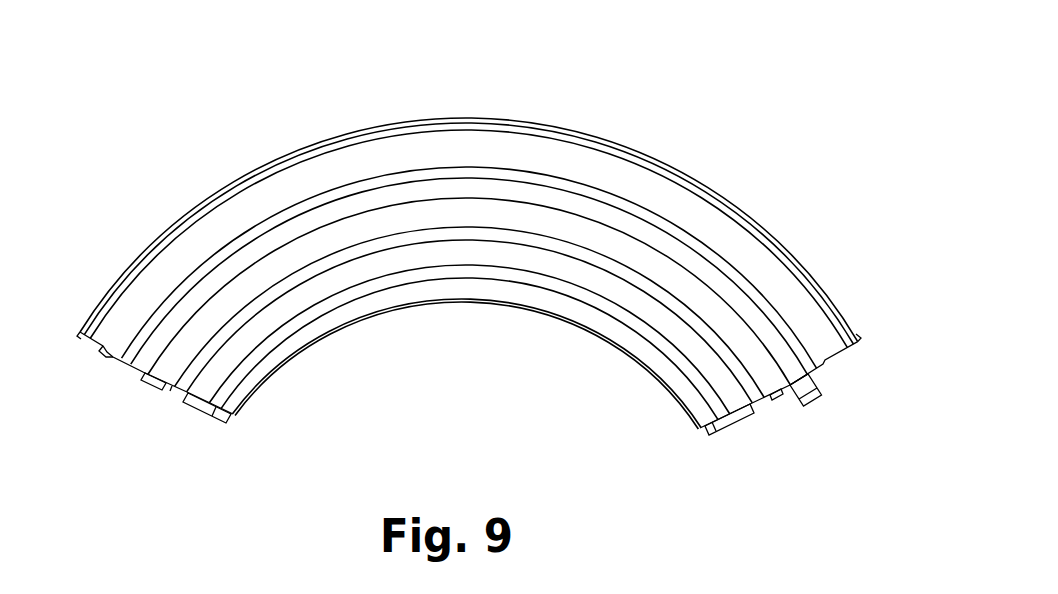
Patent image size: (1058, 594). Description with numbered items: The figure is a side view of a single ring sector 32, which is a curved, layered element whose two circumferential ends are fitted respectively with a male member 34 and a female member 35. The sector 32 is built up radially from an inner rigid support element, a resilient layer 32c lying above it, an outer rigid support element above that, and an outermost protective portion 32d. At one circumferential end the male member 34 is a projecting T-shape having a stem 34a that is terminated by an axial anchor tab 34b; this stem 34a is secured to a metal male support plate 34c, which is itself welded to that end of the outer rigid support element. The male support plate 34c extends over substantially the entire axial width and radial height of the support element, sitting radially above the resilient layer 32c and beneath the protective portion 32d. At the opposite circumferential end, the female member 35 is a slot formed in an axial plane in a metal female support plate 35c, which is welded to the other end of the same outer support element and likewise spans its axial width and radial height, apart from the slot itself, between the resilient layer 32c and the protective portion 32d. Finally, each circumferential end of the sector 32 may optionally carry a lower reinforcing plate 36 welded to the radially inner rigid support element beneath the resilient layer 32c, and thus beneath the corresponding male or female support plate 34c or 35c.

The sector 32 is at (647, 93).
The resilient layer 32c is at (181, 378).
The protective portion 32d is at (97, 338).
The male member 34 is at (798, 415).
The stem 34a is at (800, 387).
The axial anchor tab 34b is at (817, 400).
The male support plate 34c is at (778, 393).
The female member 35 is at (127, 373).
The female support plate 35c is at (157, 380).
The lower reinforcing plate 36 is at (207, 422).